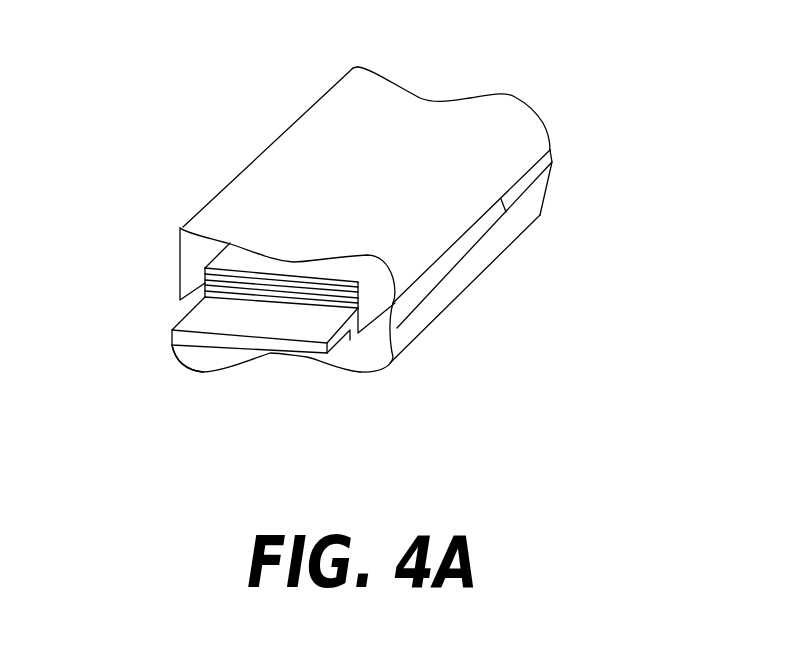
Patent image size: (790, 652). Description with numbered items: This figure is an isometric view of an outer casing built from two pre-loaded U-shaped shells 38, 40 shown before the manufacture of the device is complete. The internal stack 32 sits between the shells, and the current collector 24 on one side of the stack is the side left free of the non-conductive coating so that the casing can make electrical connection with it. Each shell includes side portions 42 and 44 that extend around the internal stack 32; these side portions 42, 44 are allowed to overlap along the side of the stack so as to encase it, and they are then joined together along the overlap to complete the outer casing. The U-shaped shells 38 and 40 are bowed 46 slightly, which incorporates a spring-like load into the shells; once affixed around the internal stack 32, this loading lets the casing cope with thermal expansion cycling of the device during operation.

The current collector 24 is at (182, 314).
The internal stack 32 is at (388, 363).
The U-shaped shell 38 is at (389, 185).
The U-shaped shell 40 is at (425, 328).
The side portion 42 is at (543, 123).
The side portion 44 is at (527, 208).
The bow 46 is at (433, 100).